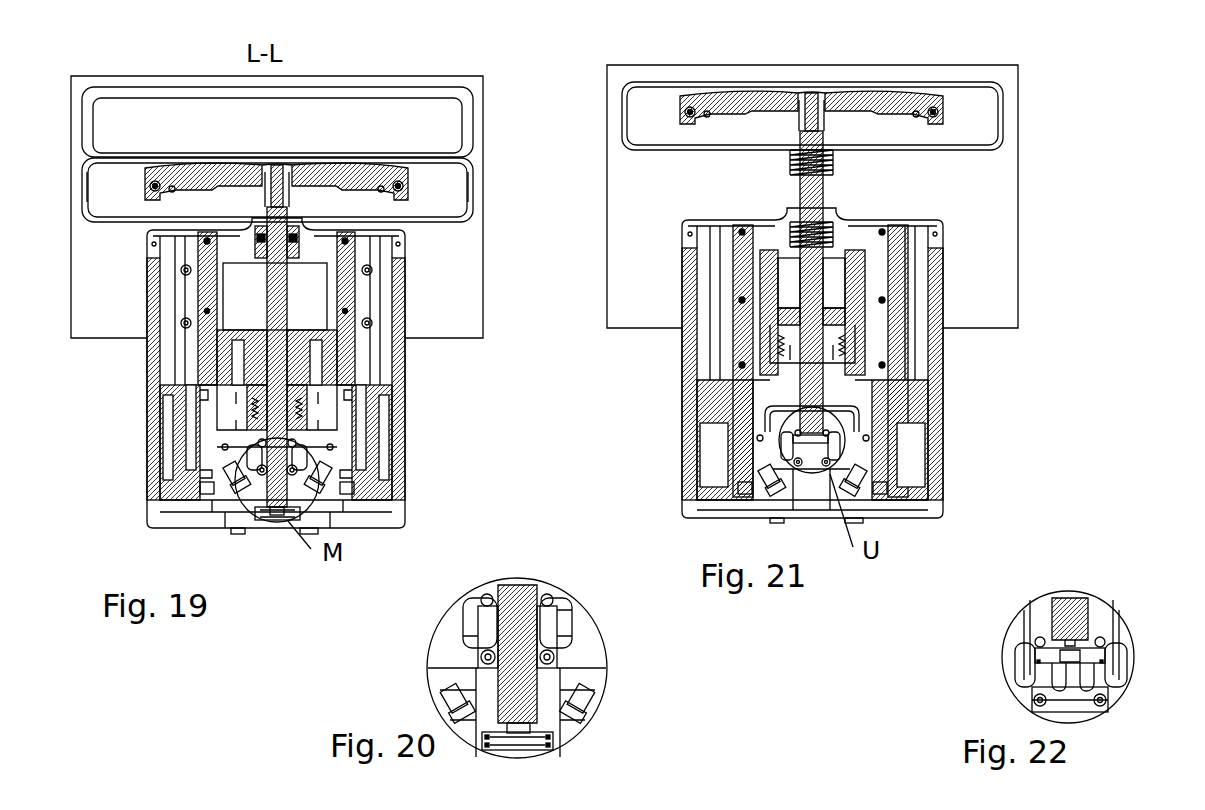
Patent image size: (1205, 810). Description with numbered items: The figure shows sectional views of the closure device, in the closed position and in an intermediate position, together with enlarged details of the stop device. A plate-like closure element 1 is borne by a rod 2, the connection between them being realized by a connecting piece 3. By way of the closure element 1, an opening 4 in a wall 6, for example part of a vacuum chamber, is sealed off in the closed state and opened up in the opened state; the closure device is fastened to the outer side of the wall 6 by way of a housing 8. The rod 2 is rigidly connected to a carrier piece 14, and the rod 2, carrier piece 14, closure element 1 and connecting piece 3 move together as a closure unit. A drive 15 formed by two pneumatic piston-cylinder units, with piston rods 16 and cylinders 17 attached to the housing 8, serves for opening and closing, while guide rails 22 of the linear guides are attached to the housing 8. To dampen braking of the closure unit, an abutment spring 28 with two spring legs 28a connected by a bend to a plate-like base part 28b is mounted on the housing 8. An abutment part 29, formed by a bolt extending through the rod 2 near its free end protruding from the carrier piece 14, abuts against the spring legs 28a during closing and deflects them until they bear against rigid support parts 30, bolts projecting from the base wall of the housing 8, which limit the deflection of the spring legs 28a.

In FIG. 19, the closure element 1 is at (102, 178).
In FIG. 21, the closure element 1 is at (972, 108).
In FIG. 19, the rod 2 is at (277, 275).
In FIG. 20, the rod 2 is at (515, 592).
In FIG. 21, the rod 2 is at (813, 197).
In FIG. 22, the rod 2 is at (1070, 605).
In FIG. 19, the connecting piece 3 is at (222, 176).
In FIG. 19, the opening 4 is at (382, 120).
In FIG. 19, the wall 6 is at (87, 247).
In FIG. 21, the wall 6 is at (995, 270).
In FIG. 19, the housing 8 is at (157, 342).
In FIG. 21, the housing 8 is at (938, 340).
In FIG. 19, the carrier piece 14 is at (290, 367).
In FIG. 21, the carrier piece 14 is at (830, 294).
In FIG. 19, the drive 15 is at (210, 435).
In FIG. 19, the piston rod 16 is at (180, 405).
In FIG. 19, the cylinder 17 is at (170, 440).
In FIG. 19, the guide rail 22 is at (207, 260).
In FIG. 19, the abutment spring 28 is at (247, 470).
In FIG. 20, the abutment spring 28 is at (472, 633).
In FIG. 22, the abutment spring 28 is at (1028, 673).
In FIG. 20, the spring leg 28a is at (487, 608).
In FIG. 20, the plate-like base part 28b is at (548, 638).
In FIG. 19, the abutment part 29 is at (268, 514).
In FIG. 20, the abutment part 29 is at (498, 737).
In FIG. 22, the abutment part 29 is at (1048, 655).
In FIG. 19, the support part 30 is at (293, 445).
In FIG. 20, the support part 30 is at (484, 596).
In FIG. 22, the support part 30 is at (1035, 640).